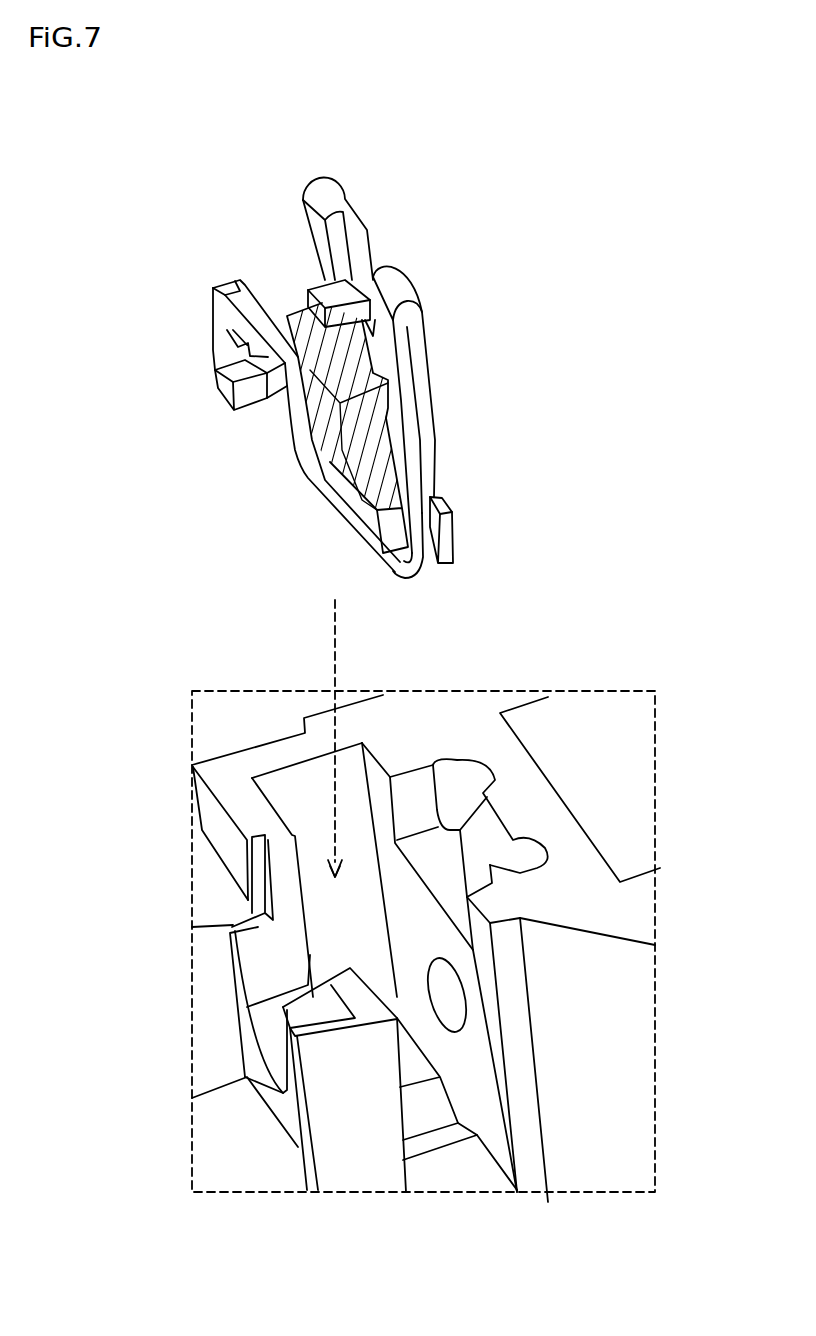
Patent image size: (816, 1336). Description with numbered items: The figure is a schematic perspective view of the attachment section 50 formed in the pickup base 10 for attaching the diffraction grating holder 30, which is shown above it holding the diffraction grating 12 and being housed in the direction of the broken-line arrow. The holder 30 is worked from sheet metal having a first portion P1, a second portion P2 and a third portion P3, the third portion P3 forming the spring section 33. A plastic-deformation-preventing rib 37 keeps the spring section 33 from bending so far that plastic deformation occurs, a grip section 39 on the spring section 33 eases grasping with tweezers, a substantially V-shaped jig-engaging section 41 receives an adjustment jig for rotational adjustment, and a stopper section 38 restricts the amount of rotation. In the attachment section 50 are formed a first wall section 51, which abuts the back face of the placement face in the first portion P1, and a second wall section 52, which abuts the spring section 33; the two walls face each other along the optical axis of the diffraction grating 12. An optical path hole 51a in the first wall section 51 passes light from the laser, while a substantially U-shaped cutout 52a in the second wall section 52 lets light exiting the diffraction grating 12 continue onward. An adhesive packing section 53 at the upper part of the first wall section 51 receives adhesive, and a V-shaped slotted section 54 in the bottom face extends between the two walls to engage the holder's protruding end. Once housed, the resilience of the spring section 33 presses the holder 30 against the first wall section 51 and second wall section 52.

The diffraction grating holder 30 is at (393, 187).
The plastic-deformation-preventing rib 37 is at (330, 290).
The diffraction grating 12 is at (287, 316).
The jig-engaging section 41 is at (367, 266).
The grip section 39 is at (230, 380).
The first portion P1 is at (428, 390).
The second portion P2 is at (417, 457).
The stopper section 38 is at (447, 545).
The spring section 33 is at (320, 478).
The third portion P3 is at (306, 426).
The attachment section 50 is at (362, 845).
The second wall section 52 is at (290, 860).
The adhesive packing section 53 is at (455, 868).
The pickup base 10 is at (628, 908).
The cutout 52a is at (270, 973).
The first wall section 51 is at (488, 1030).
The optical path hole 51a is at (448, 1005).
The slotted section 54 is at (430, 1127).